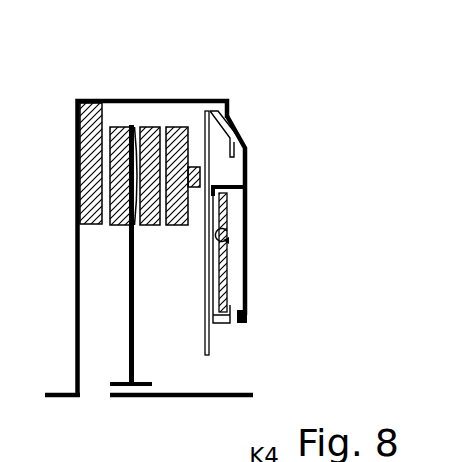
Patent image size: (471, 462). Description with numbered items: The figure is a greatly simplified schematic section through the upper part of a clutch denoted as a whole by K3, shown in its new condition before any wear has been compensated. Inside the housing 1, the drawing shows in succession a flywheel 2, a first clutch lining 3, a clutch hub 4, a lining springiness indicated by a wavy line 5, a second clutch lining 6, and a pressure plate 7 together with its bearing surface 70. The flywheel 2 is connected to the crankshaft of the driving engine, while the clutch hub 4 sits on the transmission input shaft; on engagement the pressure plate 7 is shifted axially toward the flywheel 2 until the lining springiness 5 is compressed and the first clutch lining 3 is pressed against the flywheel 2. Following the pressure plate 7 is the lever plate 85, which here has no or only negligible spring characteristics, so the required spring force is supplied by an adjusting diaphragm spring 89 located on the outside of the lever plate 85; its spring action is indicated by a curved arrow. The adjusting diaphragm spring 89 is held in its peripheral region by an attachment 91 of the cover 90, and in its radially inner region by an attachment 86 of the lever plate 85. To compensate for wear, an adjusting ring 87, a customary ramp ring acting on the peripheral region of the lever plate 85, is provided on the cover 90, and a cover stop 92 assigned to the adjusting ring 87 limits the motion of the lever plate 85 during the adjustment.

The housing 1 is at (76, 267).
The flywheel 2 is at (88, 167).
The first clutch lining 3 is at (118, 145).
The clutch hub 4 is at (129, 310).
The lining springiness 5 is at (133, 132).
The second clutch lining 6 is at (152, 226).
The pressure plate 7 is at (170, 128).
The bearing surface 70 is at (201, 174).
The lever plate 85 is at (209, 326).
The attachment 86 is at (223, 328).
The adjusting ring 87 is at (236, 132).
The adjusting diaphragm spring 89 is at (246, 245).
The cover 90 is at (247, 268).
The attachment 91 is at (228, 182).
The cover stop 92 is at (242, 308).
The clutch K3 is at (203, 86).